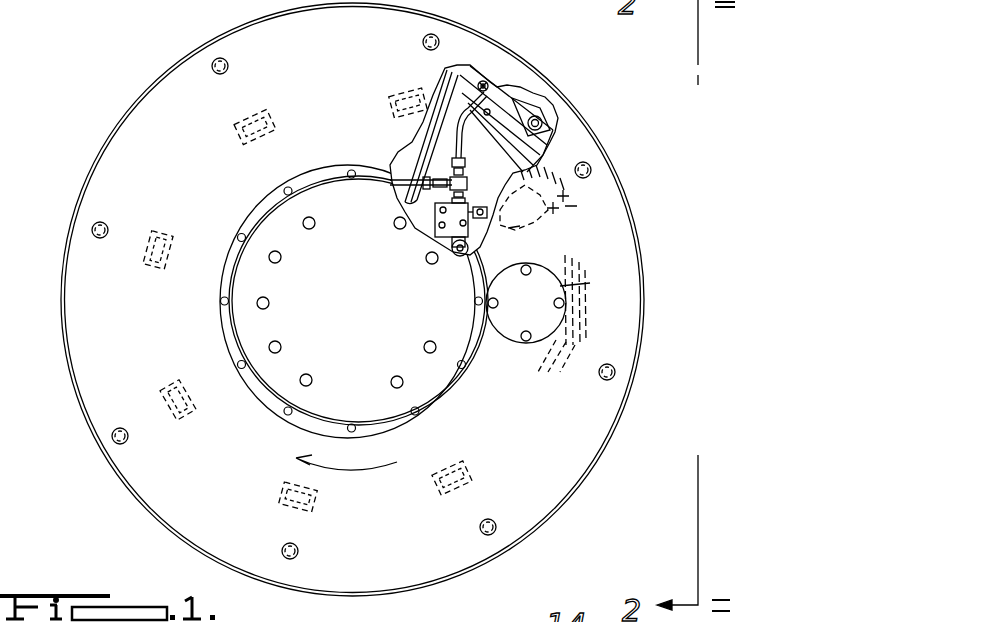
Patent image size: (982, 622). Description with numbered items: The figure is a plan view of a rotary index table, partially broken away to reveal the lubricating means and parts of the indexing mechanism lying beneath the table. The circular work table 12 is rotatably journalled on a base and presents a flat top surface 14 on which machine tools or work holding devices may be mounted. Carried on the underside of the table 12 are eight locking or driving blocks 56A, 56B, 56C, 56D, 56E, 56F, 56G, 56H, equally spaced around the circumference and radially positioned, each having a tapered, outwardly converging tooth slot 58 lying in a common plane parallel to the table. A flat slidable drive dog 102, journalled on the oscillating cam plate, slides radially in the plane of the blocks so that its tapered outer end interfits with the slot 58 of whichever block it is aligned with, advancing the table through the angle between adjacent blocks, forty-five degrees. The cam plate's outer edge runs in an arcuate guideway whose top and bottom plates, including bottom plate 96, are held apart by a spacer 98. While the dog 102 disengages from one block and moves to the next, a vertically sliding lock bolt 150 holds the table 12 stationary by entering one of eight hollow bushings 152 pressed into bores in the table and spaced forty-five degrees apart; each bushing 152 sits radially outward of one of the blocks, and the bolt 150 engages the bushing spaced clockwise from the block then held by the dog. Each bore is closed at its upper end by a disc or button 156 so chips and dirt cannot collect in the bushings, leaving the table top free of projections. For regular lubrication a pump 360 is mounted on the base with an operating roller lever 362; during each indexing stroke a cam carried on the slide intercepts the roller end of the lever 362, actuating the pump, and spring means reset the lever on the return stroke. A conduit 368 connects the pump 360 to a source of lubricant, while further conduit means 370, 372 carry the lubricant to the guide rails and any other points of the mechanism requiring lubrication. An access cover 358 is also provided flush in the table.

The circular work table 12 is at (105, 148).
The flat top surface 14 is at (632, 243).
The locking or driving block 56A is at (600, 189).
The locking or driving block 56B is at (410, 88).
The locking or driving block 56C is at (237, 128).
The locking or driving block 56D is at (163, 234).
The locking or driving block 56E is at (172, 385).
The locking or driving block 56F is at (318, 508).
The locking or driving block 56G is at (468, 474).
The locking or driving block 56H is at (536, 376).
The tooth slot 58 is at (192, 410).
The bottom plate 96 is at (510, 145).
The spacer 98 is at (520, 150).
The drive dog 102 is at (568, 199).
The lock bolt 150 is at (285, 553).
The hollow bushing 152 is at (207, 70).
The disc or button 156 is at (218, 58).
The bearing housing 358 is at (545, 288).
The pump 360 is at (435, 222).
The operating roller lever 362 is at (447, 240).
The conduit 368 is at (490, 243).
The conduit means 370 is at (452, 178).
The conduit means 372 is at (513, 95).